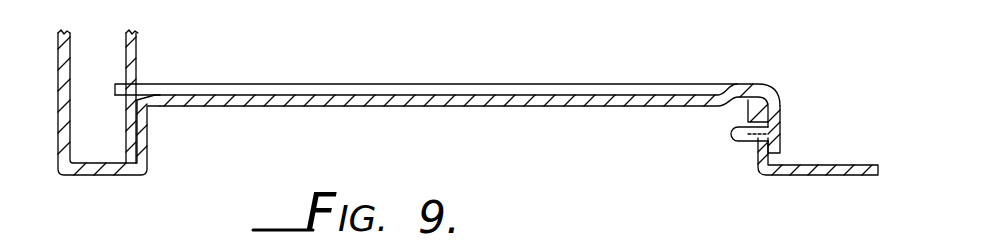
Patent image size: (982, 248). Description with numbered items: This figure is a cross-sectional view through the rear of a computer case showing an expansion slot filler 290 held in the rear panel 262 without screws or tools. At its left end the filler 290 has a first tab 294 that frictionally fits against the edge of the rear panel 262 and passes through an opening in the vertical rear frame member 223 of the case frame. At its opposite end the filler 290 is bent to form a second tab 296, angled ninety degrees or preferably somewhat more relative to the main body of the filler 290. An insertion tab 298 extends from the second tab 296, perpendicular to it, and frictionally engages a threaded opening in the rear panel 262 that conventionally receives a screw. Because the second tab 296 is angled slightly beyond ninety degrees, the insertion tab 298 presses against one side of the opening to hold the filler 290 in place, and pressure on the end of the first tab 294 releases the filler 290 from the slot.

The vertical rear frame member 223 is at (112, 177).
The rear panel 262 is at (158, 102).
The expansion slot filler 290 is at (630, 107).
The first tab 294 is at (156, 84).
The second tab 296 is at (779, 120).
The insertion tab 298 is at (734, 146).